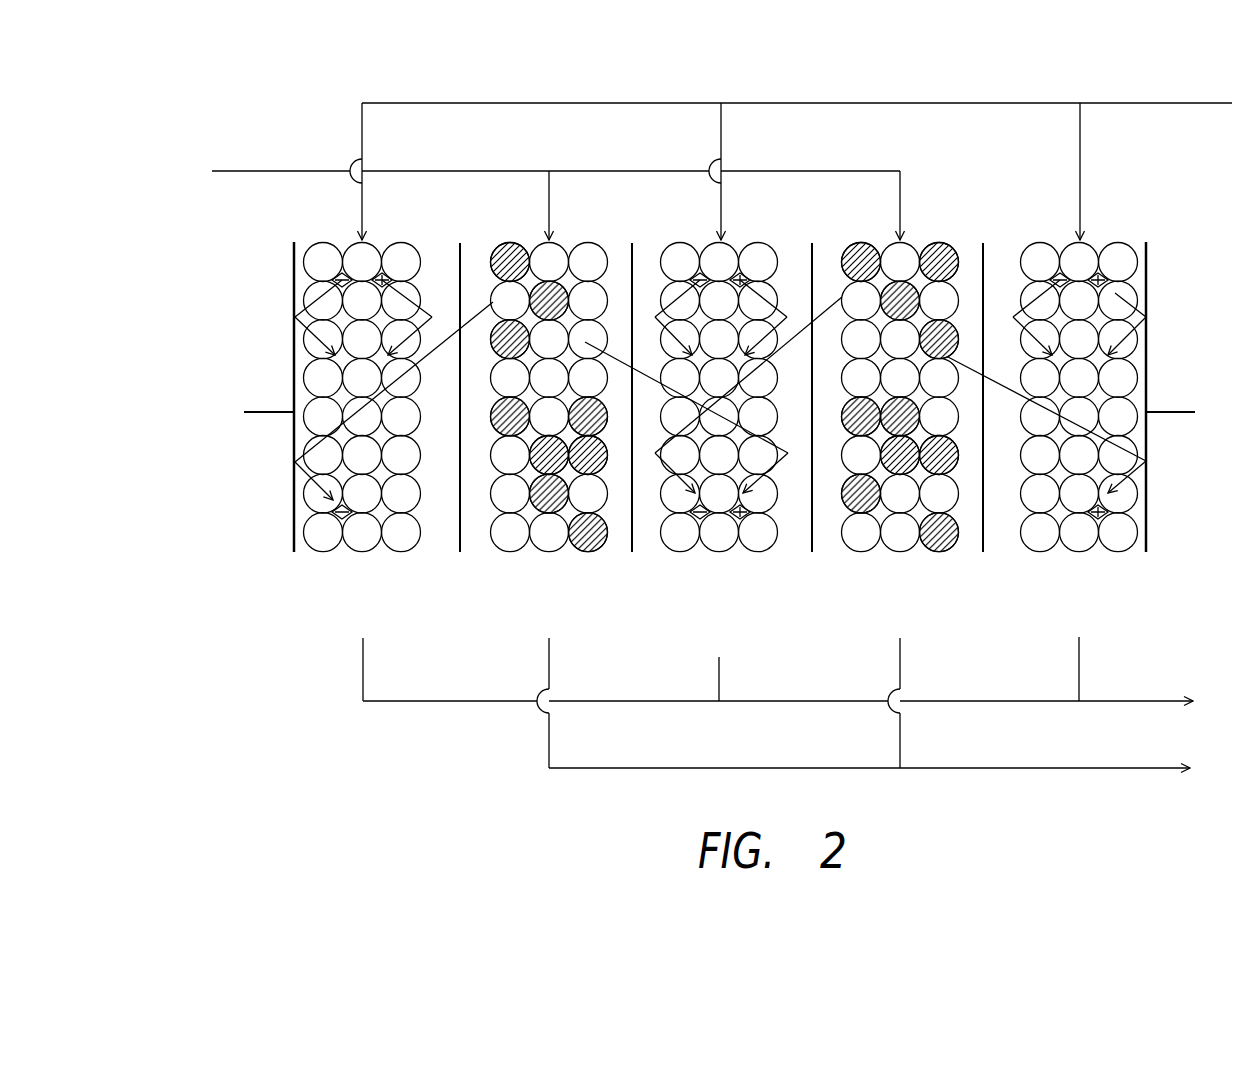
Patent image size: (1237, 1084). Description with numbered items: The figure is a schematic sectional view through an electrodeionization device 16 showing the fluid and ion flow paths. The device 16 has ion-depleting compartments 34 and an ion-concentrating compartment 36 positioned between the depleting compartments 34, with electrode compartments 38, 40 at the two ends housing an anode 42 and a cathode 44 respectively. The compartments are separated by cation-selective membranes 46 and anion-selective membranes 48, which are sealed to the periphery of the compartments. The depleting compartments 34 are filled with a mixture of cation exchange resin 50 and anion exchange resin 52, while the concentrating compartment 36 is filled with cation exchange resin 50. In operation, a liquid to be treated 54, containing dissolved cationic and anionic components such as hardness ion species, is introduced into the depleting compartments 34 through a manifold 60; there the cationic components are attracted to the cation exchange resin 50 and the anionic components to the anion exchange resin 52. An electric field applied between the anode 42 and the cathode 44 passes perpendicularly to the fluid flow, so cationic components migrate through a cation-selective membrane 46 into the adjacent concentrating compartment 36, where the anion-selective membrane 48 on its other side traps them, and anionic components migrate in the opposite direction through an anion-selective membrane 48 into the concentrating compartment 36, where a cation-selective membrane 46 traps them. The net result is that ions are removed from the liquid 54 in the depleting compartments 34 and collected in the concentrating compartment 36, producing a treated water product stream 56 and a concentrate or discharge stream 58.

The electrodeionization device 16 is at (686, 416).
The manifold 60 is at (797, 153).
The liquid to be treated 54 is at (556, 185).
The electrode compartment 38 is at (394, 415).
The ion-depleting compartment 34 is at (720, 410).
The ion-concentrating compartment 36 is at (713, 428).
The electrode compartment 40 is at (1059, 413).
The anode 42 is at (248, 397).
The cathode 44 is at (1190, 397).
The anion-selective membrane 48 is at (608, 402).
The cation-selective membrane 46 is at (780, 402).
The cation exchange resin 50 is at (699, 416).
The anion exchange resin 52 is at (732, 373).
The concentrate stream 58 is at (792, 669).
The treated water product stream 56 is at (866, 703).